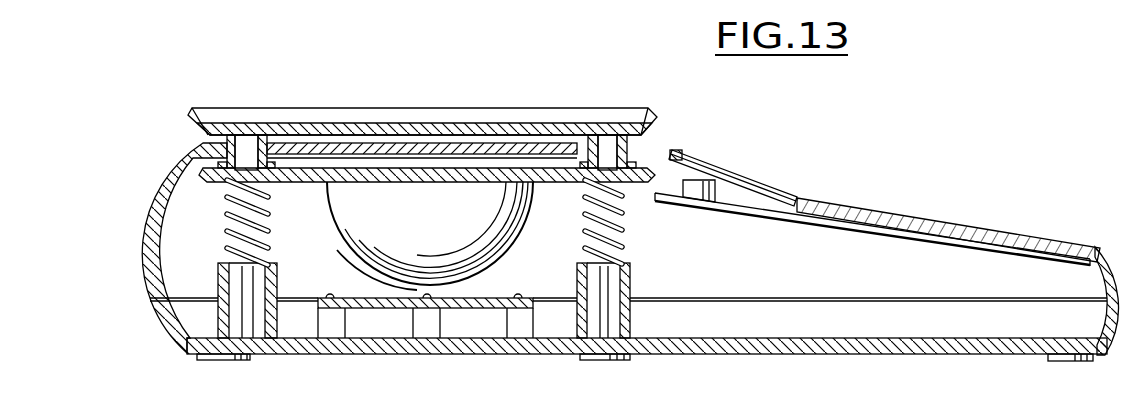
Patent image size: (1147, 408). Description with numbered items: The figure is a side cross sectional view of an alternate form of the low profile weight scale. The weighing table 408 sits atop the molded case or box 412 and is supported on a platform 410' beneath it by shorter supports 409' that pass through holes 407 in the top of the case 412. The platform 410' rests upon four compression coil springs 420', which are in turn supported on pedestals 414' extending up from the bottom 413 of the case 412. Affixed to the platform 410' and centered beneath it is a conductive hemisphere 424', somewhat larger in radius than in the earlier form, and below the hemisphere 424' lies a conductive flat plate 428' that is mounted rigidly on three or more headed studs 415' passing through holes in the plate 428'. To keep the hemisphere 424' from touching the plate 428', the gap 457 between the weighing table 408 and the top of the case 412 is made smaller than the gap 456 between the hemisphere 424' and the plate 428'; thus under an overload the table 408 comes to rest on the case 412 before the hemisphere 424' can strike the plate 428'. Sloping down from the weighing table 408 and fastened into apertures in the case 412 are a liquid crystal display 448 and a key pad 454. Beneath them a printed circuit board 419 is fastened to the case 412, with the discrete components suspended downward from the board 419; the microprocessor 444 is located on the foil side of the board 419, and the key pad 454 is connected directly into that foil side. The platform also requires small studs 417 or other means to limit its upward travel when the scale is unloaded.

The case 412 is at (150, 237).
The bottom 413 is at (487, 349).
The weighing table 408 is at (490, 128).
The gap between the weighing table and the top of the case 457 is at (372, 142).
The supports 409' is at (427, 122).
The holes 407 is at (633, 142).
The platform 410' is at (430, 233).
The conductive hemisphere 424' is at (457, 230).
The gap between the hemisphere and the plate 456 is at (353, 261).
The conductive flat plate 428' is at (425, 353).
The headed studs 415' is at (411, 279).
The pedestals 414' is at (468, 298).
The compression coil springs 420' is at (438, 225).
The pivot 417 is at (683, 147).
The liquid crystal display 448 is at (758, 182).
The key pad 454 is at (965, 228).
The printed circuit board 419 is at (928, 238).
The microprocessor 444 is at (703, 198).